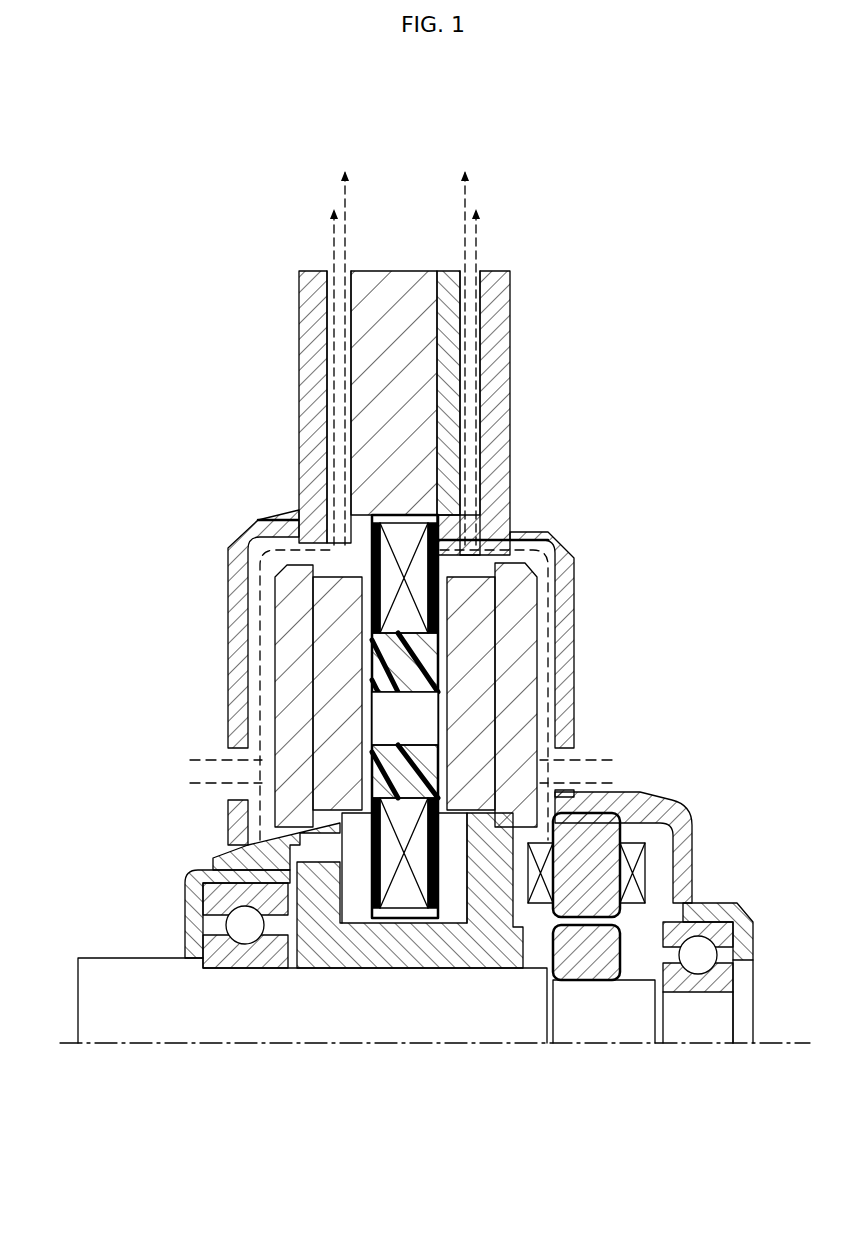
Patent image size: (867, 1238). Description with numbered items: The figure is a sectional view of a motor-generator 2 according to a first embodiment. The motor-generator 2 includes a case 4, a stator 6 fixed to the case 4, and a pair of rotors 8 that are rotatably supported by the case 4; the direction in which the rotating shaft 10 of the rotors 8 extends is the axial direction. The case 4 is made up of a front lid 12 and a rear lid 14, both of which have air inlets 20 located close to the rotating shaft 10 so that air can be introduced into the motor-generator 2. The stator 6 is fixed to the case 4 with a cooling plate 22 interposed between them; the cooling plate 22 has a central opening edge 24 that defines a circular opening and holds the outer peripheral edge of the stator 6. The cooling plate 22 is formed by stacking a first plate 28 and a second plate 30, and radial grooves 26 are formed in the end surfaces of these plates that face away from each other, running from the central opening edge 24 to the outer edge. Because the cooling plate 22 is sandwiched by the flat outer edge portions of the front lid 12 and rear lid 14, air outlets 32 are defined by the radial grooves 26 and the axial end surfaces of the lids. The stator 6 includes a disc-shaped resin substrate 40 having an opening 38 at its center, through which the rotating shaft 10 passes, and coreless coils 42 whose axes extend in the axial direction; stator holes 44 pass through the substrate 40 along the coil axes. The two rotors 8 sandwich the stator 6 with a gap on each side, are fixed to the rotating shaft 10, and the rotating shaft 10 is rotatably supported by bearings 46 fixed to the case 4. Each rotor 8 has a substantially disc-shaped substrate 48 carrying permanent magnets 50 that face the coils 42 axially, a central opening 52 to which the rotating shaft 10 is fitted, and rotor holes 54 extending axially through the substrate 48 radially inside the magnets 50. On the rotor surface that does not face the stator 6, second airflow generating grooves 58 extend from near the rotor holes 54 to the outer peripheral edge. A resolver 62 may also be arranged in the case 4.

The motor-generator 2 is at (556, 250).
The case 4 is at (516, 280).
The stator 6 is at (452, 905).
The rotors 8 is at (272, 585).
The rotating shaft 10 is at (246, 1048).
The front lid 12 is at (313, 340).
The rear lid 14 is at (497, 395).
The air inlets 20 is at (240, 757).
The cooling plate 22 is at (468, 140).
The central opening edge 24 is at (430, 540).
The radial grooves 26 is at (338, 343).
The first plate 28 is at (388, 278).
The second plate 30 is at (456, 278).
The air outlets 32 is at (342, 290).
The opening 38 is at (393, 912).
The substrate 40 is at (345, 780).
The coreless coils 42 is at (430, 580).
The stator holes 44 is at (430, 700).
The bearings 46 is at (215, 900).
The substrate 48 is at (290, 640).
The permanent magnets 50 is at (330, 625).
The opening 52 is at (492, 975).
The rotor holes 54 is at (268, 838).
The second airflow generating grooves 58 is at (262, 670).
The resolver 62 is at (640, 868).